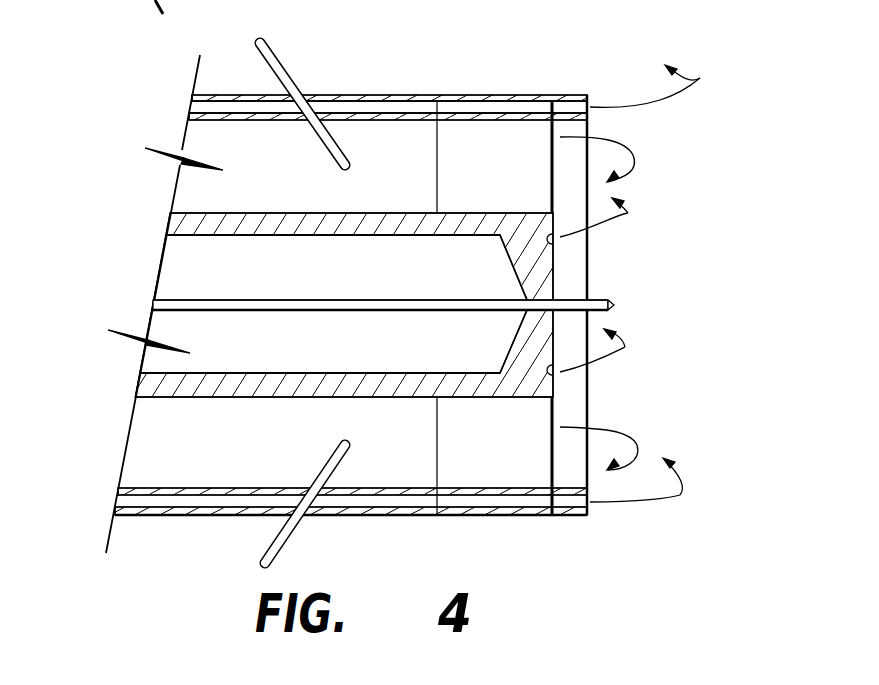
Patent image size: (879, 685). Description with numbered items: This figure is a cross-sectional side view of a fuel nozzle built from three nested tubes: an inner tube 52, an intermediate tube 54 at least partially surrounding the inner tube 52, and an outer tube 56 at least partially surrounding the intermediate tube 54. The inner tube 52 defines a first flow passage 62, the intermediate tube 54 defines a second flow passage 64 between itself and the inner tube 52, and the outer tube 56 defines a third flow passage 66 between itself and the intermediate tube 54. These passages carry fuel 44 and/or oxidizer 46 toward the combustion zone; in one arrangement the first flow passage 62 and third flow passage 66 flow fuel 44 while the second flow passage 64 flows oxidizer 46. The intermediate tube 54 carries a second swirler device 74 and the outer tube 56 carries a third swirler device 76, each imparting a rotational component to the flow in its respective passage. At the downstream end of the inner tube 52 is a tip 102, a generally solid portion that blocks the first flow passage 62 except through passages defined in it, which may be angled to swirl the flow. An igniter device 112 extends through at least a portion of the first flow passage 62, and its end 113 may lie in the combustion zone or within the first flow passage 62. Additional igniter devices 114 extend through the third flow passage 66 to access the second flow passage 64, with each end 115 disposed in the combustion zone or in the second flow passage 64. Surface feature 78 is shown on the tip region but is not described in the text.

The fuel 44 is at (700, 78).
The oxidizer 46 is at (628, 142).
The inner tube 52 is at (258, 213).
The intermediate tube 54 is at (408, 112).
The outer tube 56 is at (333, 95).
The first flow passage 62 is at (320, 304).
The second flow passage 64 is at (389, 131).
The third flow passage 66 is at (207, 108).
The second swirler device 74 is at (495, 143).
The third swirler device 76 is at (518, 108).
The notch 78 is at (556, 238).
The tip 102 is at (552, 275).
The igniter device 112 is at (367, 313).
The end 113 is at (616, 303).
The igniter device 114 is at (262, 63).
The end 115 is at (347, 167).